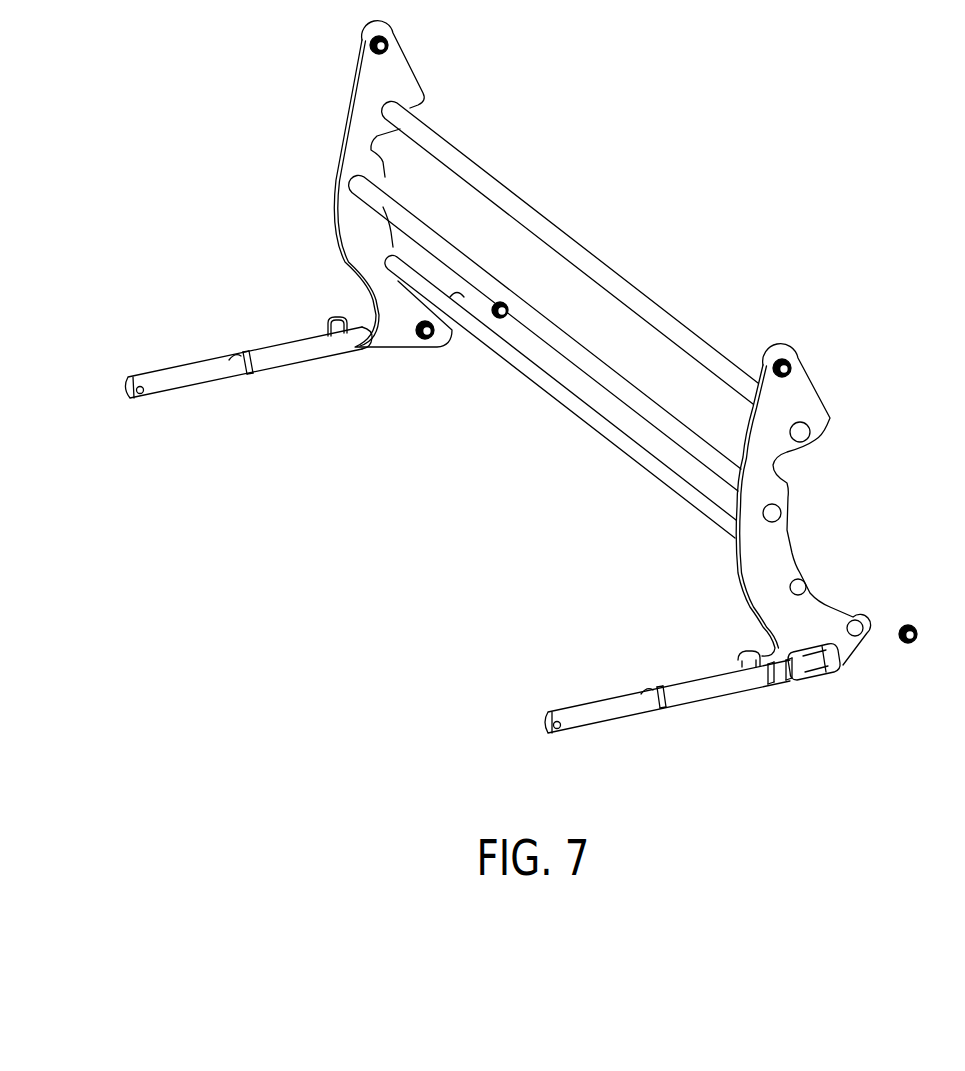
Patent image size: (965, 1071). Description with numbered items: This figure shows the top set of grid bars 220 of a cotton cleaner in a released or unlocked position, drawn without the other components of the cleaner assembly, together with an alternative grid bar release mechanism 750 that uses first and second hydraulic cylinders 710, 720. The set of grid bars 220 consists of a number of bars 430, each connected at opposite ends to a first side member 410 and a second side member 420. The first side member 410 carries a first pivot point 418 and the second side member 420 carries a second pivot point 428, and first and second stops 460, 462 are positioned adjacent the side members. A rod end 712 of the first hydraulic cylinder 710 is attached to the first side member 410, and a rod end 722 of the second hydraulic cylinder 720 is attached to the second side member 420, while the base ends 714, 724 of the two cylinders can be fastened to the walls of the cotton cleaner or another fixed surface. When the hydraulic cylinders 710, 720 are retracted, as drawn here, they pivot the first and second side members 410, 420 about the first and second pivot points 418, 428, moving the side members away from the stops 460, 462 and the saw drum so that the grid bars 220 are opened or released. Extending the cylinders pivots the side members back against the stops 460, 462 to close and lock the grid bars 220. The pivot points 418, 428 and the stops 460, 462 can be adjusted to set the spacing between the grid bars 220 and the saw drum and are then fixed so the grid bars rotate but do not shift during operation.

The top set of grid bars 220 is at (592, 168).
The first side member 410 is at (345, 160).
The first pivot point 418 is at (389, 44).
The second side member 420 is at (777, 553).
The second pivot point 428 is at (792, 369).
The bars 430 is at (629, 449).
The first stop 460 is at (493, 318).
The second stop 462 is at (913, 647).
The first hydraulic cylinder 710 is at (202, 405).
The rod end of the first hydraulic cylinder 712 is at (330, 319).
The base end of the first hydraulic cylinder 714 is at (163, 374).
The second hydraulic cylinder 720 is at (712, 720).
The rod end of the second hydraulic cylinder 722 is at (813, 673).
The base end of the second hydraulic cylinder 724 is at (562, 728).
The grid bar release mechanism 750 is at (250, 398).